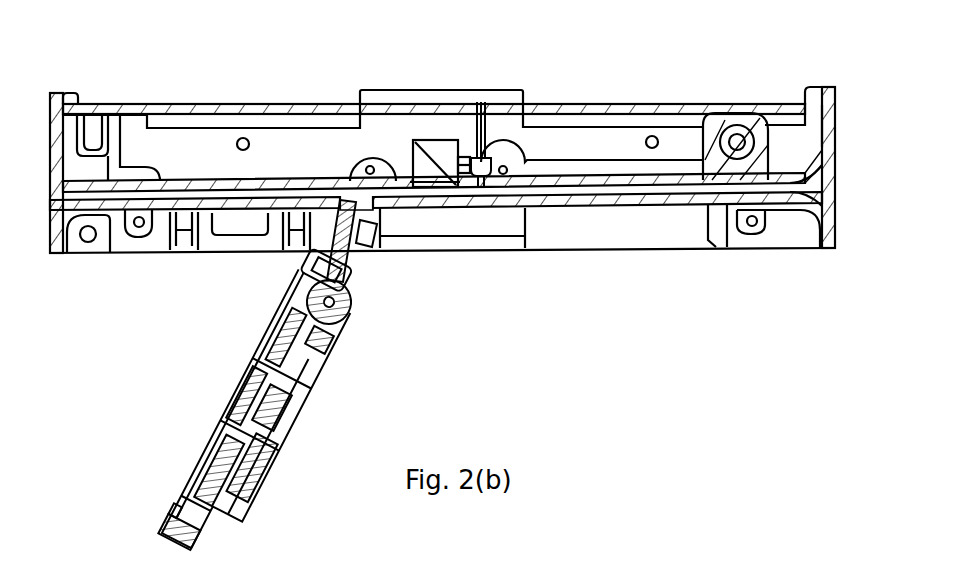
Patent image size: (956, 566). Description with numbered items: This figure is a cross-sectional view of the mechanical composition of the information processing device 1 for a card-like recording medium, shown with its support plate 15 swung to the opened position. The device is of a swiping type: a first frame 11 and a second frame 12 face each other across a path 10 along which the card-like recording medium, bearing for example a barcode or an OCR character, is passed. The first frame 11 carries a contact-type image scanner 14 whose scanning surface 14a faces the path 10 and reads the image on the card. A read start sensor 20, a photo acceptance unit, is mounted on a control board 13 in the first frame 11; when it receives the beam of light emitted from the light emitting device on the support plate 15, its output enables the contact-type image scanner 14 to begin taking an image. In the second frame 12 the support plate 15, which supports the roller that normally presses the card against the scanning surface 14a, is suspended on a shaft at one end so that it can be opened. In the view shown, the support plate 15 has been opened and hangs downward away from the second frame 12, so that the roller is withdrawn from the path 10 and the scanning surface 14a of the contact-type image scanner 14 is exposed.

The information processing device 1 is at (757, 90).
The path 10 is at (790, 188).
The first frame 11 is at (53, 102).
The second frame 12 is at (60, 232).
The control board 13 is at (258, 104).
The contact-type image scanner 14 is at (447, 140).
The scanning surface 14a is at (430, 150).
The support plate 15 is at (267, 382).
The read start sensor 20 is at (484, 163).